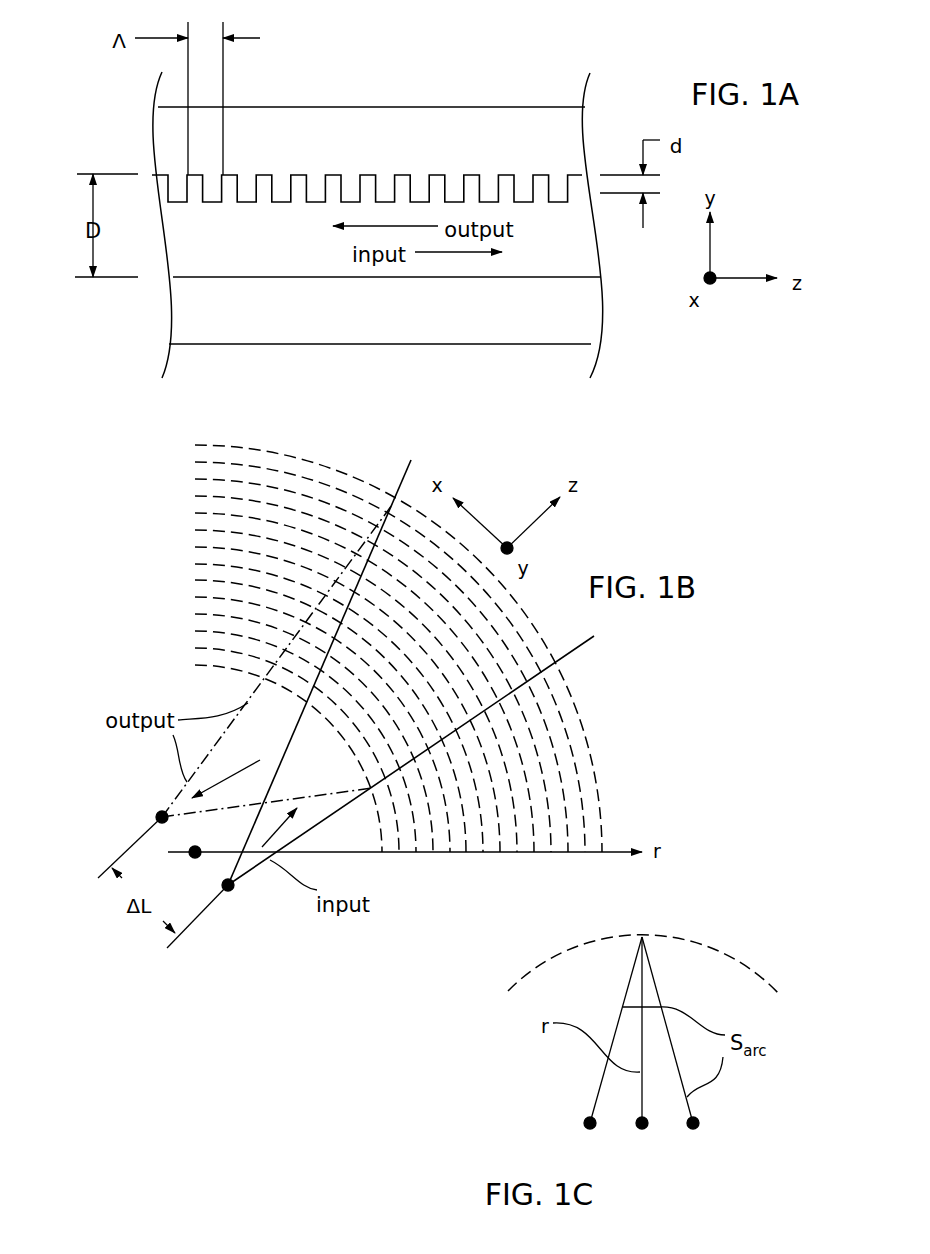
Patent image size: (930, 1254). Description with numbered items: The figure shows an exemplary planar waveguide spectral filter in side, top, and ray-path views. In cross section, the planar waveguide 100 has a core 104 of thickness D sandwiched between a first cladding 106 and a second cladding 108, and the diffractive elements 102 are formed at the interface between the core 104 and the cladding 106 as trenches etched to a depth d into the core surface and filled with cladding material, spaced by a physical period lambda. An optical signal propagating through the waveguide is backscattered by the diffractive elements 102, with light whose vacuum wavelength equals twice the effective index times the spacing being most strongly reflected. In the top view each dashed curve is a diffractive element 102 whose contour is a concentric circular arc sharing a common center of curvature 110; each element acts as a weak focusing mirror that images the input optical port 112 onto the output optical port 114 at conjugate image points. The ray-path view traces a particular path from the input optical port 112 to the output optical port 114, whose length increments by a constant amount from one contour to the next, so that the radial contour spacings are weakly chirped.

In FIG. 1A, the planar waveguide 100 is at (312, 209).
In FIG. 1A, the diffractive elements 102 is at (351, 180).
In FIG. 1B, the diffractive elements 102 is at (200, 463).
In FIG. 1C, the diffractive elements 102 is at (545, 960).
In FIG. 1A, the core 104 is at (196, 248).
In FIG. 1A, the first cladding 106 is at (281, 147).
In FIG. 1A, the second cladding 108 is at (385, 335).
In FIG. 1B, the common center of curvature 110 is at (168, 852).
In FIG. 1C, the common center of curvature 110 is at (648, 1128).
In FIG. 1B, the input optical port 112 is at (232, 890).
In FIG. 1C, the input optical port 112 is at (700, 1123).
In FIG. 1B, the output optical port 114 is at (158, 813).
In FIG. 1C, the output optical port 114 is at (584, 1125).